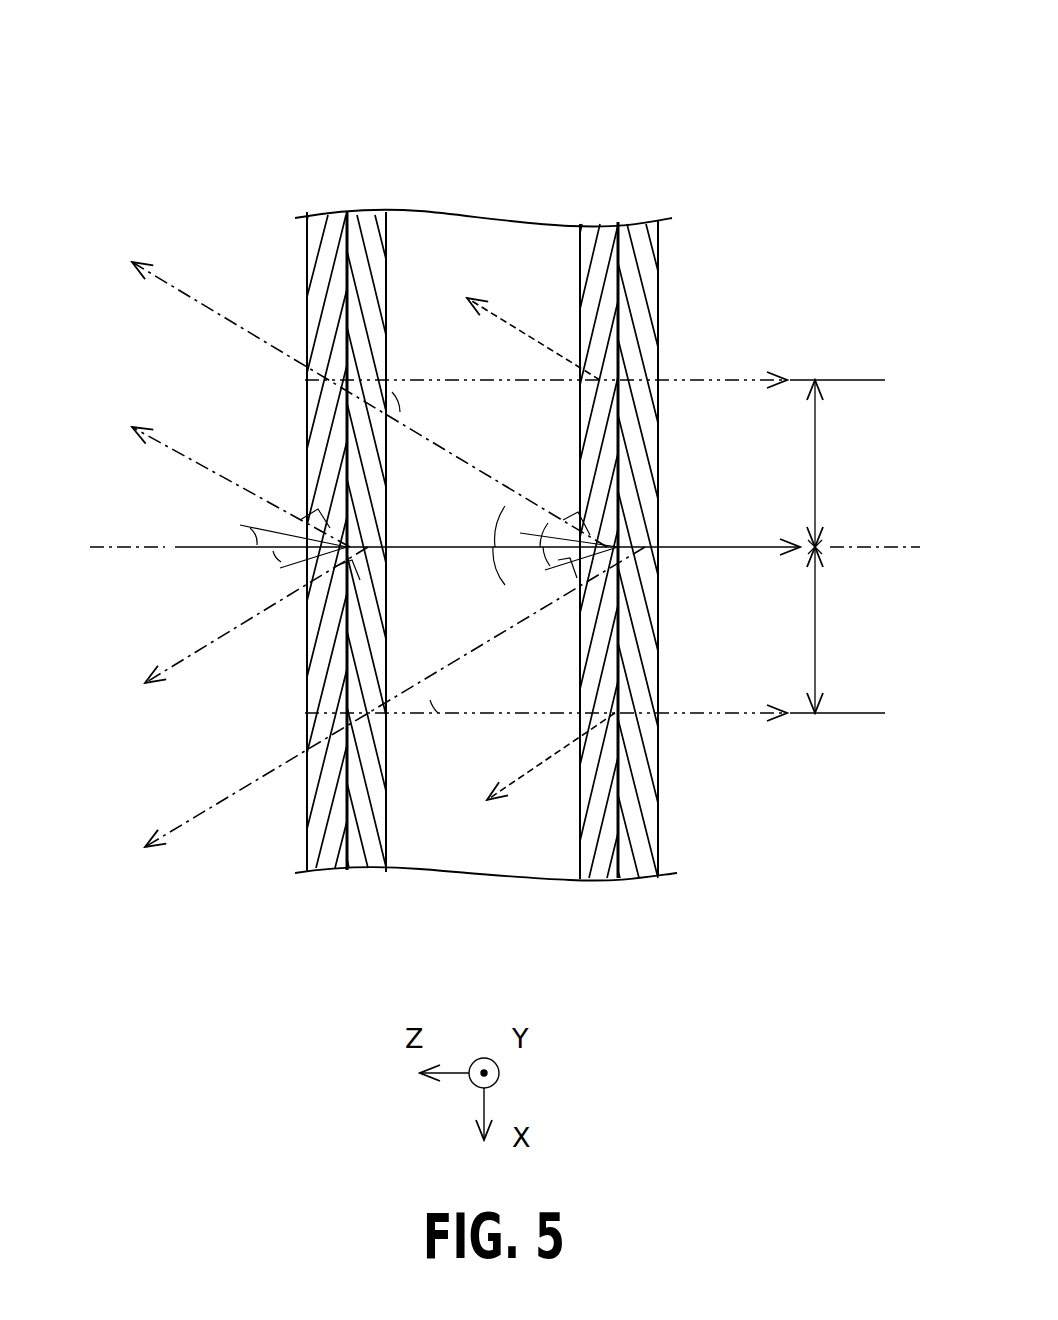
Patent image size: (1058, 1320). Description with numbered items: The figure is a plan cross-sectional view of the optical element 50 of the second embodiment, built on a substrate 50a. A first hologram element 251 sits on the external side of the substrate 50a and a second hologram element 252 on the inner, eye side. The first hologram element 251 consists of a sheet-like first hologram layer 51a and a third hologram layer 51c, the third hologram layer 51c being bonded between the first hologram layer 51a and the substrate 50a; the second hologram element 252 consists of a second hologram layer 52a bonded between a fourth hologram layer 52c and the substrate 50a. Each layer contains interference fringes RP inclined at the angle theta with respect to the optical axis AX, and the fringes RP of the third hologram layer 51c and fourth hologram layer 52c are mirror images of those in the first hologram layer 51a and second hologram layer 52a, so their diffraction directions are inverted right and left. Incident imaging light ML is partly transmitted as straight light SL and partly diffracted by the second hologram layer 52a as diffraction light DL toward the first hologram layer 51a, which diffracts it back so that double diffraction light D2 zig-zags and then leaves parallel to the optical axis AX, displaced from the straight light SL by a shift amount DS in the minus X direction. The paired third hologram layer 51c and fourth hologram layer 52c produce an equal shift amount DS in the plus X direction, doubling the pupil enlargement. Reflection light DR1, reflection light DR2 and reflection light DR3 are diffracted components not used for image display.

The optical element 50 is at (500, 440).
The substrate 50a is at (472, 212).
The first hologram element 251 is at (345, 484).
The second hologram element 252 is at (615, 487).
The first hologram layer 51a is at (323, 213).
The third hologram layer 51c is at (368, 213).
The second hologram layer 52a is at (598, 216).
The fourth hologram layer 52c is at (640, 216).
The optical axis AX is at (905, 552).
The straight light SL is at (705, 553).
The imaging light ML is at (218, 553).
The diffraction light DL is at (428, 418).
The double diffraction light D2 is at (418, 375).
The shift amount DS is at (839, 546).
The interference fringe RP is at (340, 500).
The reflection light DR1 is at (175, 450).
The reflection light DR2 is at (180, 292).
The reflection light DR3 is at (522, 335).